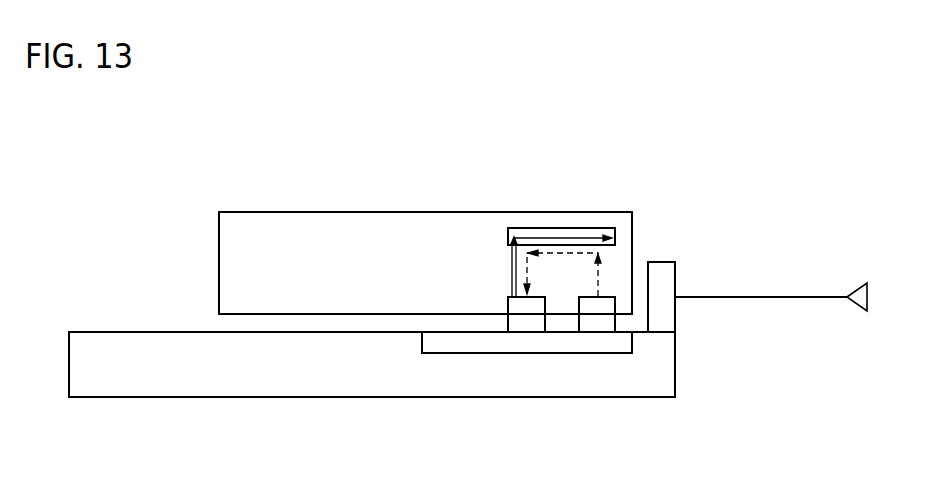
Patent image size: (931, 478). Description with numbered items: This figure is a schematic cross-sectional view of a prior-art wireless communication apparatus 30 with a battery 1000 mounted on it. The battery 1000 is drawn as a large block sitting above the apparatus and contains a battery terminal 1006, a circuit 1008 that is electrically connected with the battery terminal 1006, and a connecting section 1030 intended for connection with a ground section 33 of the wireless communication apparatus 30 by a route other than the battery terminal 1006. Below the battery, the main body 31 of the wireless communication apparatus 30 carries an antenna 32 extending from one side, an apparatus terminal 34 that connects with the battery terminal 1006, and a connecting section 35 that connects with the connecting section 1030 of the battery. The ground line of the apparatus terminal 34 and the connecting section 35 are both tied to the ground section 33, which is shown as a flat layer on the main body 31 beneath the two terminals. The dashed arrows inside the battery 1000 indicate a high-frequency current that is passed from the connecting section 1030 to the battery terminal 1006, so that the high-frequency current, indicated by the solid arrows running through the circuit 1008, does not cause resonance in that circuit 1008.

The battery 1000 is at (392, 192).
The circuit 1008 is at (532, 228).
The connecting section 1030 is at (614, 295).
The battery terminal 1006 is at (508, 303).
The wireless communication apparatus 30 is at (675, 410).
The main body 31 is at (380, 398).
The antenna 32 is at (780, 296).
The ground section 33 is at (455, 355).
The apparatus terminal 34 is at (533, 325).
The connecting section 35 is at (605, 325).